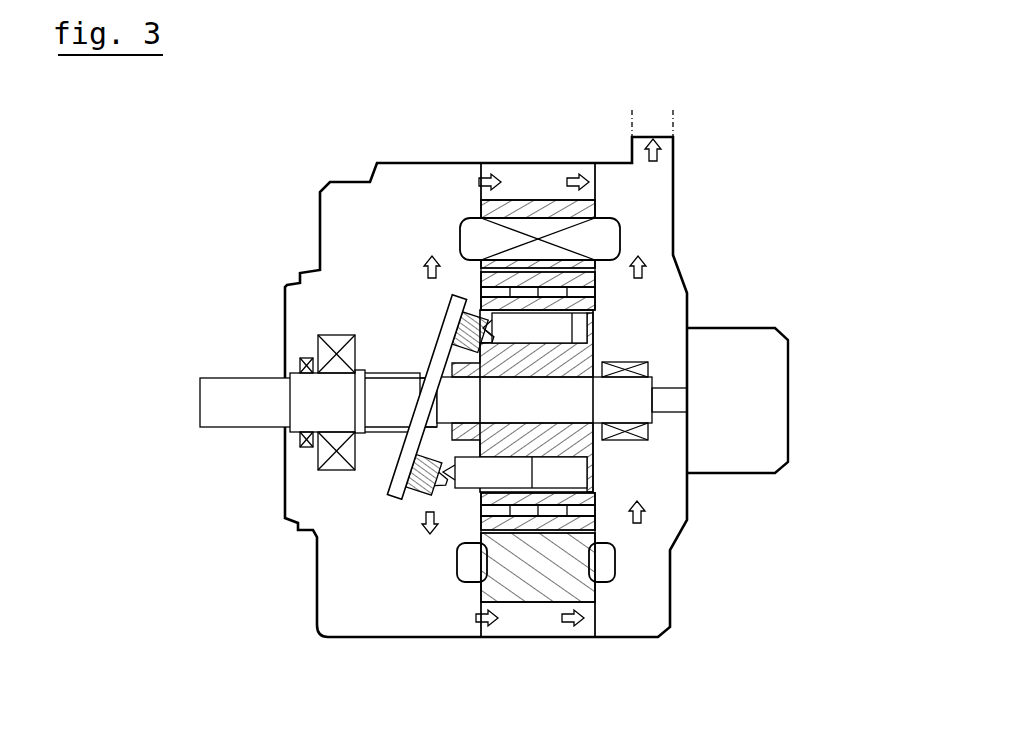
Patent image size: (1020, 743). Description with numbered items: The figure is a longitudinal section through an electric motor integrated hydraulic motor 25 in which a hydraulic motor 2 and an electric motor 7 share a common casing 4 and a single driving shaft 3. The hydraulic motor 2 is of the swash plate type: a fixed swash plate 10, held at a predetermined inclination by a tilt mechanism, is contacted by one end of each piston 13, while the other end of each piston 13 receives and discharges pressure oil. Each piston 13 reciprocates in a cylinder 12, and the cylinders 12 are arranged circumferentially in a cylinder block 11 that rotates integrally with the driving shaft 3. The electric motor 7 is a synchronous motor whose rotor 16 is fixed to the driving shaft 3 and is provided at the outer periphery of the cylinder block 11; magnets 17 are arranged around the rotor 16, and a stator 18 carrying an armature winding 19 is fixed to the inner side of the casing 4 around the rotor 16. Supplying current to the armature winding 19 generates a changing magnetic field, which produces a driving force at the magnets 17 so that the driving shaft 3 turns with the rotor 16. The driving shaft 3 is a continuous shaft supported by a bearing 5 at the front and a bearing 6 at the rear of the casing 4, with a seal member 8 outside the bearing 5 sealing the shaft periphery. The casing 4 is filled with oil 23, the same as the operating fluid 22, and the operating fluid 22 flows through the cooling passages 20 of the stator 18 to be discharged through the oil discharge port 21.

The hydraulic motor 2 is at (420, 508).
The driving shaft 3 is at (225, 417).
The casing 4 is at (317, 228).
The bearing 5 is at (337, 463).
The bearing 6 is at (630, 360).
The electric motor 7 is at (655, 331).
The seal member 8 is at (290, 442).
The fixed swash plate 10 is at (437, 357).
The cylinder block 11 is at (595, 448).
The cylinder 12 is at (604, 521).
The piston 13 is at (468, 477).
The rotor 16 is at (600, 280).
The magnet 17 is at (597, 293).
The stator 18 is at (521, 198).
The armature winding 19 is at (607, 240).
The cooling passage 20 is at (555, 175).
The oil discharge port 21 is at (650, 137).
The operating fluid 22 is at (429, 255).
The oil 23 is at (384, 224).
The electric motor integrated hydraulic motor 25 is at (820, 107).